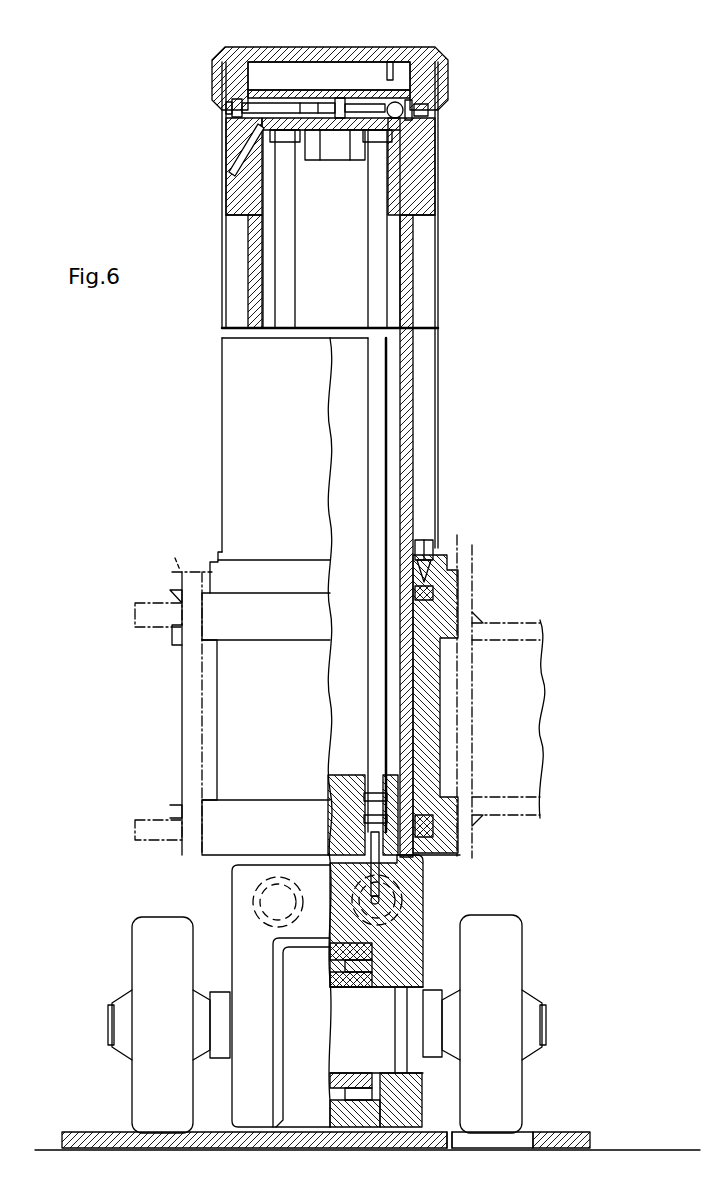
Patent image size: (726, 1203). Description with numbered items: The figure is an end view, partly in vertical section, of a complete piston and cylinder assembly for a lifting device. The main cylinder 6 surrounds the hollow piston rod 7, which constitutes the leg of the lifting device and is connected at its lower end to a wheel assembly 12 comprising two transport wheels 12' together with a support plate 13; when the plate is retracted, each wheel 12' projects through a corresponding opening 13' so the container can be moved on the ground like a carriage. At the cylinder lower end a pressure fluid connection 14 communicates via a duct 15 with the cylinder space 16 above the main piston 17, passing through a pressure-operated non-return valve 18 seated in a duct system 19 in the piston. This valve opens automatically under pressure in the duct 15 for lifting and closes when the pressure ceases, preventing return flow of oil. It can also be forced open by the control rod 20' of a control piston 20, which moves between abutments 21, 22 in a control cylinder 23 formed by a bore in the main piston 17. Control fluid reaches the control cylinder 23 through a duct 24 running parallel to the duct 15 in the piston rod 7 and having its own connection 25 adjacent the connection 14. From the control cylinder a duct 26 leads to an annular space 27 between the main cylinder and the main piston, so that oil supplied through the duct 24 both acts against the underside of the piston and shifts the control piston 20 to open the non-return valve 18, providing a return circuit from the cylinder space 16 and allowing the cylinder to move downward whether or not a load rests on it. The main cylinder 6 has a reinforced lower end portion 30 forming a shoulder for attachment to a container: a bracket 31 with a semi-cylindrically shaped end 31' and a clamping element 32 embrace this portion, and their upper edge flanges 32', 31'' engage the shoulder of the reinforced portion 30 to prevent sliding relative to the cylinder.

The main cylinder 6 is at (439, 293).
The piston rod 7 is at (414, 259).
The wheel assembly 12 is at (439, 996).
The transport wheels 12' is at (334, 1024).
The support plate 13 is at (367, 1158).
The opening 13' is at (448, 1158).
The pressure fluid connection 14 is at (425, 893).
The duct 15 is at (370, 453).
The cylinder space 16 is at (401, 62).
The main piston 17 is at (268, 82).
The non-return valve 18 is at (405, 109).
The duct system 19 is at (356, 130).
The control piston 20 is at (335, 160).
The control rod 20' is at (389, 40).
The abutment 21 is at (287, 103).
The abutment 22 is at (368, 104).
The control cylinder 23 is at (246, 99).
The duct 24 is at (288, 239).
The connection 25 is at (265, 896).
The duct 26 is at (232, 150).
The annular space 27 is at (235, 263).
The reinforced lower end portion 30 is at (441, 612).
The bracket 31 is at (523, 696).
The semi-cylindrically shaped end 31' is at (526, 609).
The upper edge flange 31'' is at (460, 563).
The clamping element 32 is at (173, 713).
The upper edge flange 32' is at (174, 553).